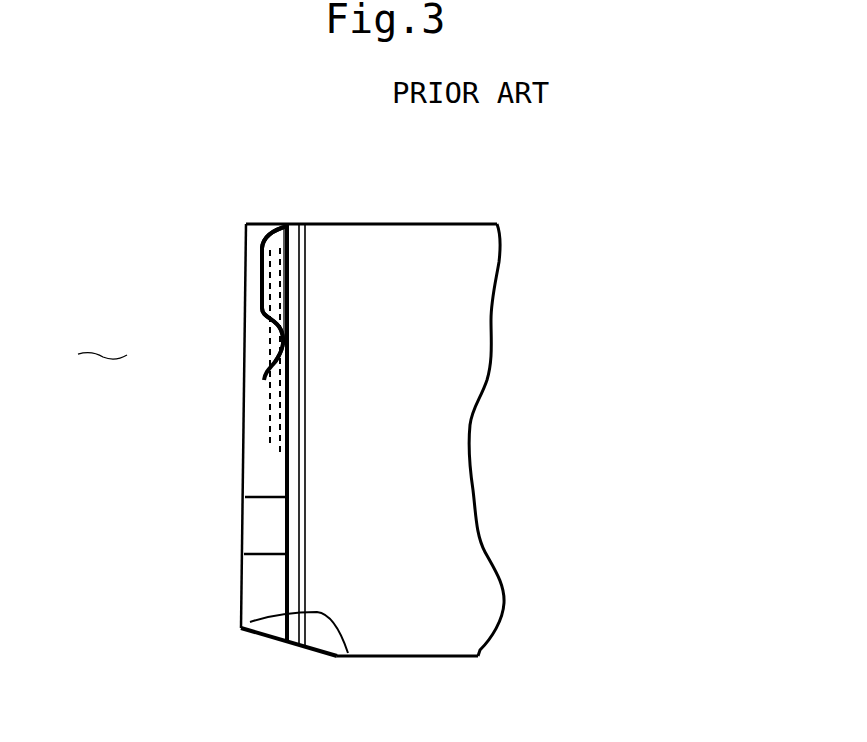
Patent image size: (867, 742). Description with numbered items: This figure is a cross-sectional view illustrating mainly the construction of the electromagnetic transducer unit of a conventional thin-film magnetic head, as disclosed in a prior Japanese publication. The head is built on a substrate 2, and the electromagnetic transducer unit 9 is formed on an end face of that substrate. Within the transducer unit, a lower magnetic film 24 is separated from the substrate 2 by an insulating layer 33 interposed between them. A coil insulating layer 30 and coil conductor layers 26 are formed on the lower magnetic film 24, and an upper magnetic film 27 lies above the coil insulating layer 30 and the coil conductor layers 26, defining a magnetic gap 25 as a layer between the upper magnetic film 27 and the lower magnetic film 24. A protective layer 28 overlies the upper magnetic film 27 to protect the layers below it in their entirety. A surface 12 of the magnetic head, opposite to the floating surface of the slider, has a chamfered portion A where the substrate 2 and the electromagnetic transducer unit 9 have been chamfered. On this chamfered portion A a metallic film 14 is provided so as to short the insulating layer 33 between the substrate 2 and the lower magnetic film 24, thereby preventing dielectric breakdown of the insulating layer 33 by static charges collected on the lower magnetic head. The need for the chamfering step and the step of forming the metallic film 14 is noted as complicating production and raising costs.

The substrate 2 is at (455, 480).
The surface of the magnetic head 12 is at (420, 657).
The metallic film 14 is at (282, 647).
The lower magnetic film 24 is at (283, 388).
The magnetic gap 25 is at (288, 223).
The coil conductor layers 26 is at (268, 335).
The upper magnetic film 27 is at (258, 294).
The protective layer 28 is at (253, 448).
The coil insulating layer 30 is at (262, 252).
The insulating layer 33 is at (300, 238).
The electromagnetic transducer unit 9 is at (62, 371).
The chamfered portion A is at (299, 622).